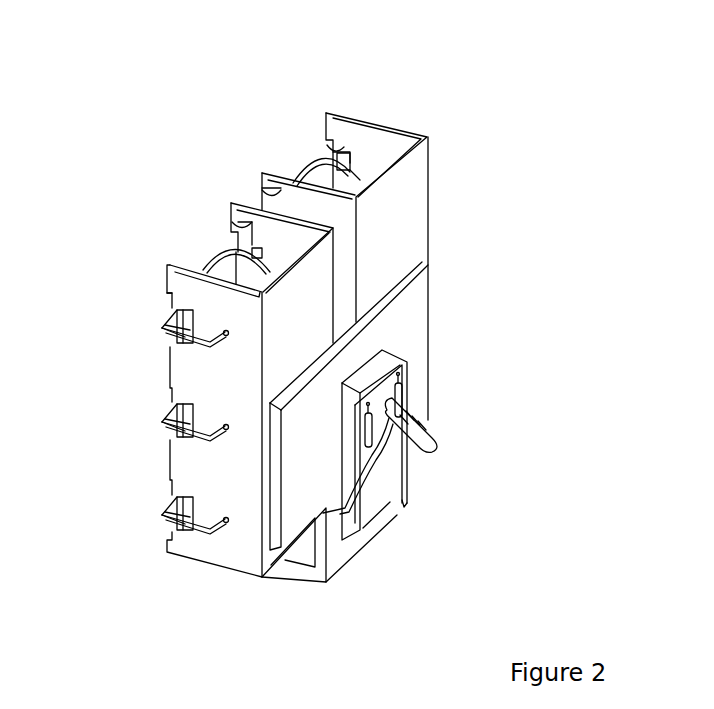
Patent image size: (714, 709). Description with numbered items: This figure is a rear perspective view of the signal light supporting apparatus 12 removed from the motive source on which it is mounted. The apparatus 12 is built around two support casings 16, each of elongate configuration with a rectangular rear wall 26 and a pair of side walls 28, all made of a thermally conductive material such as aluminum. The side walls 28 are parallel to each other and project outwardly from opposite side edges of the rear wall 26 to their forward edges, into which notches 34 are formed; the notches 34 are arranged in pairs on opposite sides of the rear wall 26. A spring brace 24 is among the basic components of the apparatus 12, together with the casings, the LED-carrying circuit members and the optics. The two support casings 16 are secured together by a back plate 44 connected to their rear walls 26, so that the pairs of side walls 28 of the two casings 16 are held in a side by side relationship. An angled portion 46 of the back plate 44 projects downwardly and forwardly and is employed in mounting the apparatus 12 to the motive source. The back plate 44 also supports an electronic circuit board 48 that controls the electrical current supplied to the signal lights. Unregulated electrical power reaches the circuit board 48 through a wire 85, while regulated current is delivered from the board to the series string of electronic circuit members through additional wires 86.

The signal light supporting apparatus 12 is at (421, 97).
The support casing 16 is at (388, 227).
The spring brace 24 is at (160, 328).
The rear wall 26 is at (415, 213).
The side wall 28 is at (353, 138).
The notch 34 is at (150, 307).
The back plate 44 is at (290, 508).
The angled portion 46 is at (340, 560).
The electronic circuit board 48 is at (387, 403).
The wire 85 is at (432, 448).
The additional wire 86 is at (420, 425).